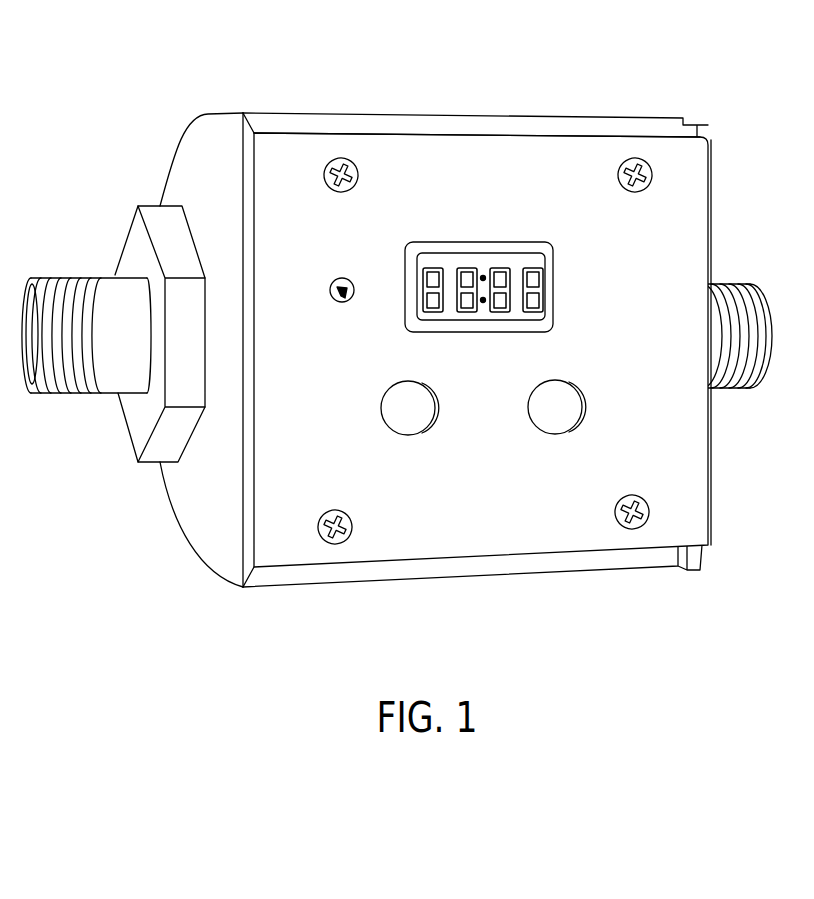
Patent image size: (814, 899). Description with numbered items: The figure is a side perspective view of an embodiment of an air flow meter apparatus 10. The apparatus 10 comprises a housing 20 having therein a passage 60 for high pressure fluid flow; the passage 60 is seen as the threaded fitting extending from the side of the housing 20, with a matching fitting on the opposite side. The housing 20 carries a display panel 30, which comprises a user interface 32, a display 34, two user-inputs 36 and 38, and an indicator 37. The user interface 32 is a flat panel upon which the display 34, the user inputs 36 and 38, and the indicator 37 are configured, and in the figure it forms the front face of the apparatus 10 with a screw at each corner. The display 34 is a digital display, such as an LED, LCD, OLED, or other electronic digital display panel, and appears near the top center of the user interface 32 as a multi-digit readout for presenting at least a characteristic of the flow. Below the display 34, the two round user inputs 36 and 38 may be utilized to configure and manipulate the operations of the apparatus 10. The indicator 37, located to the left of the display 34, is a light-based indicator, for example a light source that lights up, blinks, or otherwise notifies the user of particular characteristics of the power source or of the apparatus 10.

The air flow meter apparatus 10 is at (696, 98).
The housing 20 is at (193, 135).
The display panel 30 is at (477, 170).
The user interface 32 is at (304, 445).
The display 34 is at (518, 265).
The user-input 36 is at (403, 392).
The indicator 37 is at (340, 283).
The user-input 38 is at (555, 392).
The passage 60 is at (115, 290).